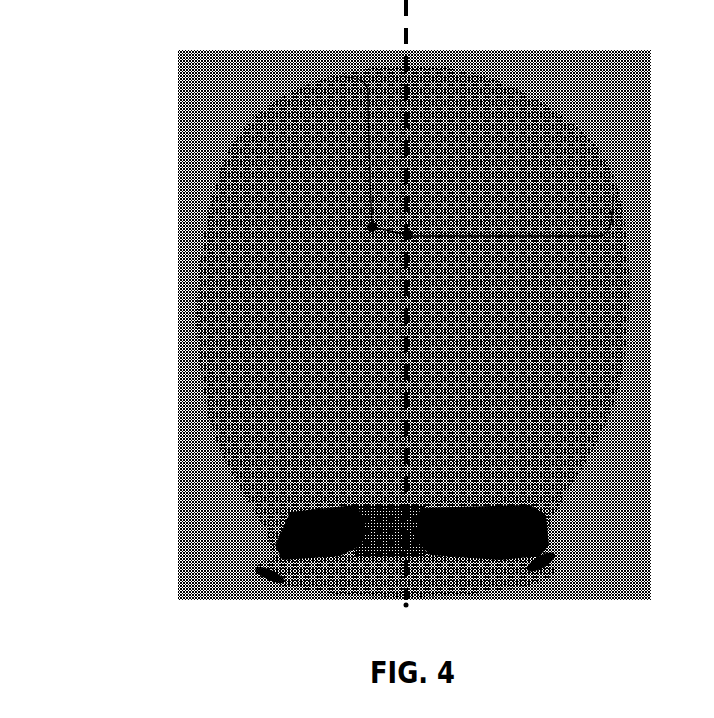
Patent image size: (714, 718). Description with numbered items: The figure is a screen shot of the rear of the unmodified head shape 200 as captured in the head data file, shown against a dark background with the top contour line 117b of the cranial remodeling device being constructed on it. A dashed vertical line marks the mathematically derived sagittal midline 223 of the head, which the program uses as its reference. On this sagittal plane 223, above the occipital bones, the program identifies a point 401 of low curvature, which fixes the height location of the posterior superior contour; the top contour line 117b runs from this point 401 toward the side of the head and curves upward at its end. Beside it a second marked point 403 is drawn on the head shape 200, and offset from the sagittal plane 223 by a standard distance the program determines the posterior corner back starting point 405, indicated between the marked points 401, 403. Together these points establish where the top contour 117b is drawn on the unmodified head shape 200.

The unmodified head shape 200 is at (228, 320).
The sagittal midline 223 is at (355, 304).
The top contour line 117b is at (518, 233).
The point of low curvature 401 is at (412, 240).
The second reference point 403 is at (366, 231).
The posterior corner back starting point 405 is at (378, 244).